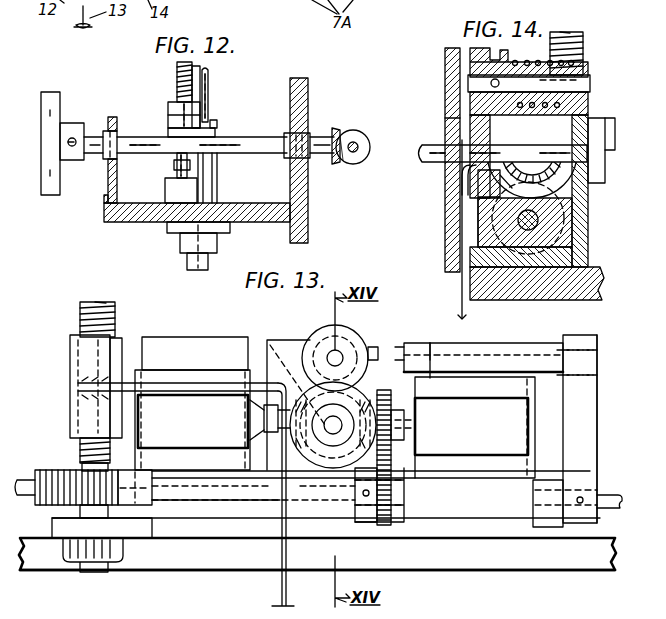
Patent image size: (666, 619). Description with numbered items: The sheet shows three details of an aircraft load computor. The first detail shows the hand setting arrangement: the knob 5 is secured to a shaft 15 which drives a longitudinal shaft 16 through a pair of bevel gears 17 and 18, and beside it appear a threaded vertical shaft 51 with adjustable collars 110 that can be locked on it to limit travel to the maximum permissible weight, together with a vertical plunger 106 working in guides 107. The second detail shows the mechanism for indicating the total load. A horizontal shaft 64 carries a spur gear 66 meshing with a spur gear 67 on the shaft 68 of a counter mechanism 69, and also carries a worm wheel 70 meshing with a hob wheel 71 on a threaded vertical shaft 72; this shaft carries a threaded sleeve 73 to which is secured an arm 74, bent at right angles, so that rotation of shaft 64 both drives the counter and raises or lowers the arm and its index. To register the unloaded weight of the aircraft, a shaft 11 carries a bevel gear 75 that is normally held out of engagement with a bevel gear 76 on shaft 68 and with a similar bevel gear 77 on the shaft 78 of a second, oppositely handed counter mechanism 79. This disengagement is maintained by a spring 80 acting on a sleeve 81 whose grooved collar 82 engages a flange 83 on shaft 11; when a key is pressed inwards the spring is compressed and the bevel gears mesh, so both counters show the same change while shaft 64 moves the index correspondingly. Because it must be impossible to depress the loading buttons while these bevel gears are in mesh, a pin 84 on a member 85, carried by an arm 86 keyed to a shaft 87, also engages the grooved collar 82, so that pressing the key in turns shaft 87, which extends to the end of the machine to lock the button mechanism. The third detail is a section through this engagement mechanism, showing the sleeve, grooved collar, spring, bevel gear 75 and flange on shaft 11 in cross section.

In FIG. 12, the knob 5 is at (57, 104).
In FIG. 12, the shaft 15 is at (133, 140).
In FIG. 12, the longitudinal shaft 16 is at (359, 140).
In FIG. 12, the bevel gear 17 is at (338, 128).
In FIG. 12, the bevel gear 18 is at (355, 164).
In FIG. 12, the vertical shaft 51 is at (207, 93).
In FIG. 12, the vertical plunger 106 is at (178, 76).
In FIG. 12, the guides 107 is at (205, 187).
In FIG. 12, the adjustable collars 110 is at (205, 115).
In FIG. 14, the shaft 11 is at (430, 157).
In FIG. 13, the shaft 11 is at (385, 418).
In FIG. 13, the horizontal shaft 64 is at (23, 480).
In FIG. 13, the spur gear 66 is at (393, 505).
In FIG. 13, the spur gear 67 is at (432, 395).
In FIG. 13, the shaft 68 is at (457, 375).
In FIG. 13, the counter mechanism 69 is at (478, 408).
In FIG. 13, the worm wheel 70 is at (70, 478).
In FIG. 13, the hob wheel 71 is at (52, 506).
In FIG. 14, the vertical shaft 72 is at (580, 36).
In FIG. 13, the vertical shaft 72 is at (82, 325).
In FIG. 13, the threaded sleeve 73 is at (72, 360).
In FIG. 13, the arm 74 is at (188, 386).
In FIG. 14, the bevel gear 75 is at (538, 143).
In FIG. 13, the bevel gear 75 is at (322, 375).
In FIG. 14, the bevel gear 76 is at (462, 312).
In FIG. 13, the bevel gear 76 is at (440, 342).
In FIG. 13, the bevel gear 77 is at (282, 380).
In FIG. 13, the shaft 78 is at (266, 410).
In FIG. 13, the counter mechanism 79 is at (151, 405).
In FIG. 14, the spring 80 is at (574, 58).
In FIG. 14, the sleeve 81 is at (591, 80).
In FIG. 14, the grooved collar 82 is at (490, 70).
In FIG. 13, the grooved collar 82 is at (342, 340).
In FIG. 14, the flange 83 is at (478, 195).
In FIG. 13, the pin 84 is at (346, 412).
In FIG. 13, the member 85 is at (565, 352).
In FIG. 13, the arm 86 is at (578, 441).
In FIG. 13, the shaft 87 is at (610, 508).